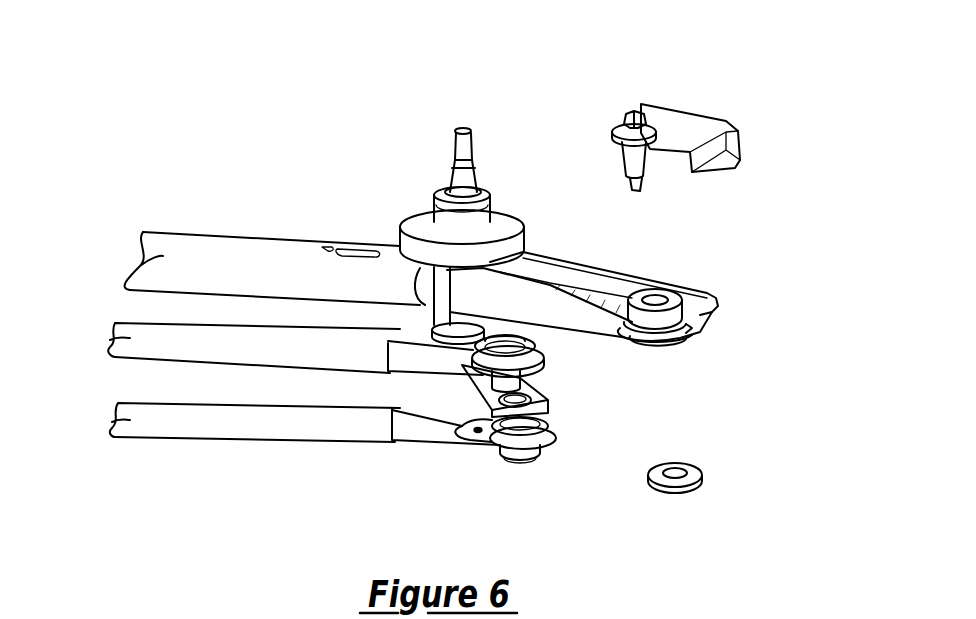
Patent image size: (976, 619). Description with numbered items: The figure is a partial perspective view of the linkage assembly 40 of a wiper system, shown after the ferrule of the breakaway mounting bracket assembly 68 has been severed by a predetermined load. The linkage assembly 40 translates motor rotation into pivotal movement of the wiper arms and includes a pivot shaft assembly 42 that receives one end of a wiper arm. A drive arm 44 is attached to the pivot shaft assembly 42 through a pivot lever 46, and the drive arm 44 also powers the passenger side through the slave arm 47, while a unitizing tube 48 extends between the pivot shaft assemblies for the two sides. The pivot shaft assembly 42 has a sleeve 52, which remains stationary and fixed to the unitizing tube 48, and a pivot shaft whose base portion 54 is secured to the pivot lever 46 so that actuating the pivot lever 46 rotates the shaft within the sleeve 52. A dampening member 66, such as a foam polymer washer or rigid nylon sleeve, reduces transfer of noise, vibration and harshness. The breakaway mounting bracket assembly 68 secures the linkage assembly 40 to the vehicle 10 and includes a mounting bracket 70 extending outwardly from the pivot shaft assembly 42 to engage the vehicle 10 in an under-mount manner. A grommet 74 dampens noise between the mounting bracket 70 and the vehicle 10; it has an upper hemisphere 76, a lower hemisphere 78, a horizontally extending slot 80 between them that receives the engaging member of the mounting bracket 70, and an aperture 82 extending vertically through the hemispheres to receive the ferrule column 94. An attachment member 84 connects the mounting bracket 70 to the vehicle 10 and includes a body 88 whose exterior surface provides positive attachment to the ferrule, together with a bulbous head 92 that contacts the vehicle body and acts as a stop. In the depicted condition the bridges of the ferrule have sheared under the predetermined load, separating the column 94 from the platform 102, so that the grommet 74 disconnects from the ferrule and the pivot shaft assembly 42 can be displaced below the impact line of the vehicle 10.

The vehicle 10 is at (756, 126).
The linkage assembly 40 is at (170, 206).
The pivot shaft assembly 42 is at (422, 134).
The drive arm 44 is at (128, 429).
The pivot lever 46 is at (553, 410).
The slave arm 47 is at (130, 345).
The unitizing tube 48 is at (160, 253).
The sleeve 52 is at (448, 217).
The base portion 54 is at (440, 331).
The dampening member 66 is at (410, 244).
The breakaway mounting bracket assembly 68 is at (587, 358).
The mounting bracket 70 is at (606, 329).
The grommet 74 is at (690, 321).
The upper hemisphere 76 is at (674, 293).
The lower hemisphere 78 is at (660, 346).
The horizontally extending slot 80 is at (695, 331).
The aperture 82 is at (640, 297).
The attachment member 84 is at (628, 96).
The body 88 is at (645, 193).
The bulbous head 92 is at (626, 115).
The column 94 is at (650, 169).
The platform 102 is at (700, 471).